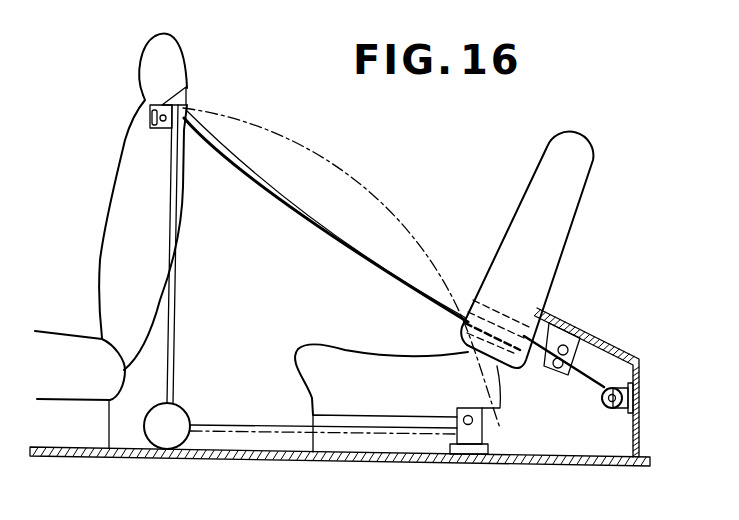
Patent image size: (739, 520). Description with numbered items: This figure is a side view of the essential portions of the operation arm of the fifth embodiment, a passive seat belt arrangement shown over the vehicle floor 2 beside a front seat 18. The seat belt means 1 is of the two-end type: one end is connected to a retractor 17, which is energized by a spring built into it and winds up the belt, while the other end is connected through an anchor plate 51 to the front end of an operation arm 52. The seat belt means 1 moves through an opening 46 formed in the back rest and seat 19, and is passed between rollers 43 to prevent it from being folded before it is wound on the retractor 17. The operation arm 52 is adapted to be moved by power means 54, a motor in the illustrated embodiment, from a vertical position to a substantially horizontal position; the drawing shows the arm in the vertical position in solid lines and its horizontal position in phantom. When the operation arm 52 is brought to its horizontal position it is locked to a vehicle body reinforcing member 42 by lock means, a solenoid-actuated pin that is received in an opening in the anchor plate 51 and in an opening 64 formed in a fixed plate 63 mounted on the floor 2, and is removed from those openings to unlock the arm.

The seat belt means 1 is at (295, 206).
The vehicle floor 2 is at (276, 460).
The retractor 17 is at (612, 410).
The front seat 18 is at (123, 197).
The seat 19 is at (539, 291).
The vehicle body reinforcing member 42 is at (628, 354).
The rollers 43 is at (565, 377).
The opening 46 is at (484, 280).
The anchor plate 51 is at (148, 113).
The operation arm 52 is at (174, 297).
The power means 54 is at (165, 438).
The fixed plate 63 is at (480, 448).
The opening 64 is at (467, 425).